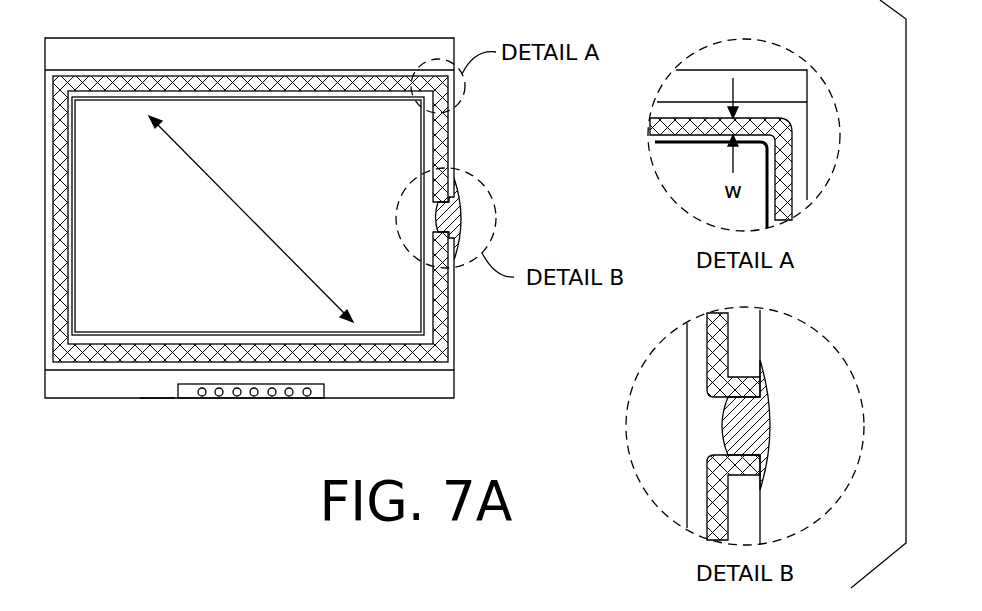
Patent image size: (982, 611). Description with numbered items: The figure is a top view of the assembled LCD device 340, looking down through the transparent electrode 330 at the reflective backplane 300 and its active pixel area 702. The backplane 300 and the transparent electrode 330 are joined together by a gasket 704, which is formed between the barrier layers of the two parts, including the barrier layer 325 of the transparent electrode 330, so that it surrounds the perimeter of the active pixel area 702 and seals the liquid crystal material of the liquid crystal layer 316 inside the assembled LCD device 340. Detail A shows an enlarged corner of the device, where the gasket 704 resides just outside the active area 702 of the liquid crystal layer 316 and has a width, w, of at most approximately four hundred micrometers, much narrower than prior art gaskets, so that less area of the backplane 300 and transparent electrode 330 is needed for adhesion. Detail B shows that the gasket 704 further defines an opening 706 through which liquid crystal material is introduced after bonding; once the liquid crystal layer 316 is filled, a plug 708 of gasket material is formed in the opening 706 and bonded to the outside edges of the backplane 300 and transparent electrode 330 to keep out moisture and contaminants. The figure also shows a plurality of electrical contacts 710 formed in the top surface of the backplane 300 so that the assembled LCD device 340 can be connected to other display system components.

The reflective backplane 300 is at (88, 393).
The liquid crystal layer 316 is at (302, 160).
The barrier layer 325 is at (401, 380).
The transparent electrode 330 is at (270, 56).
The assembled LCD device 340 is at (155, 428).
The active pixel area 702 is at (124, 262).
The gasket 704 is at (443, 325).
The opening 706 is at (418, 213).
The plug 708 is at (455, 212).
The electrical contacts 710 is at (253, 397).